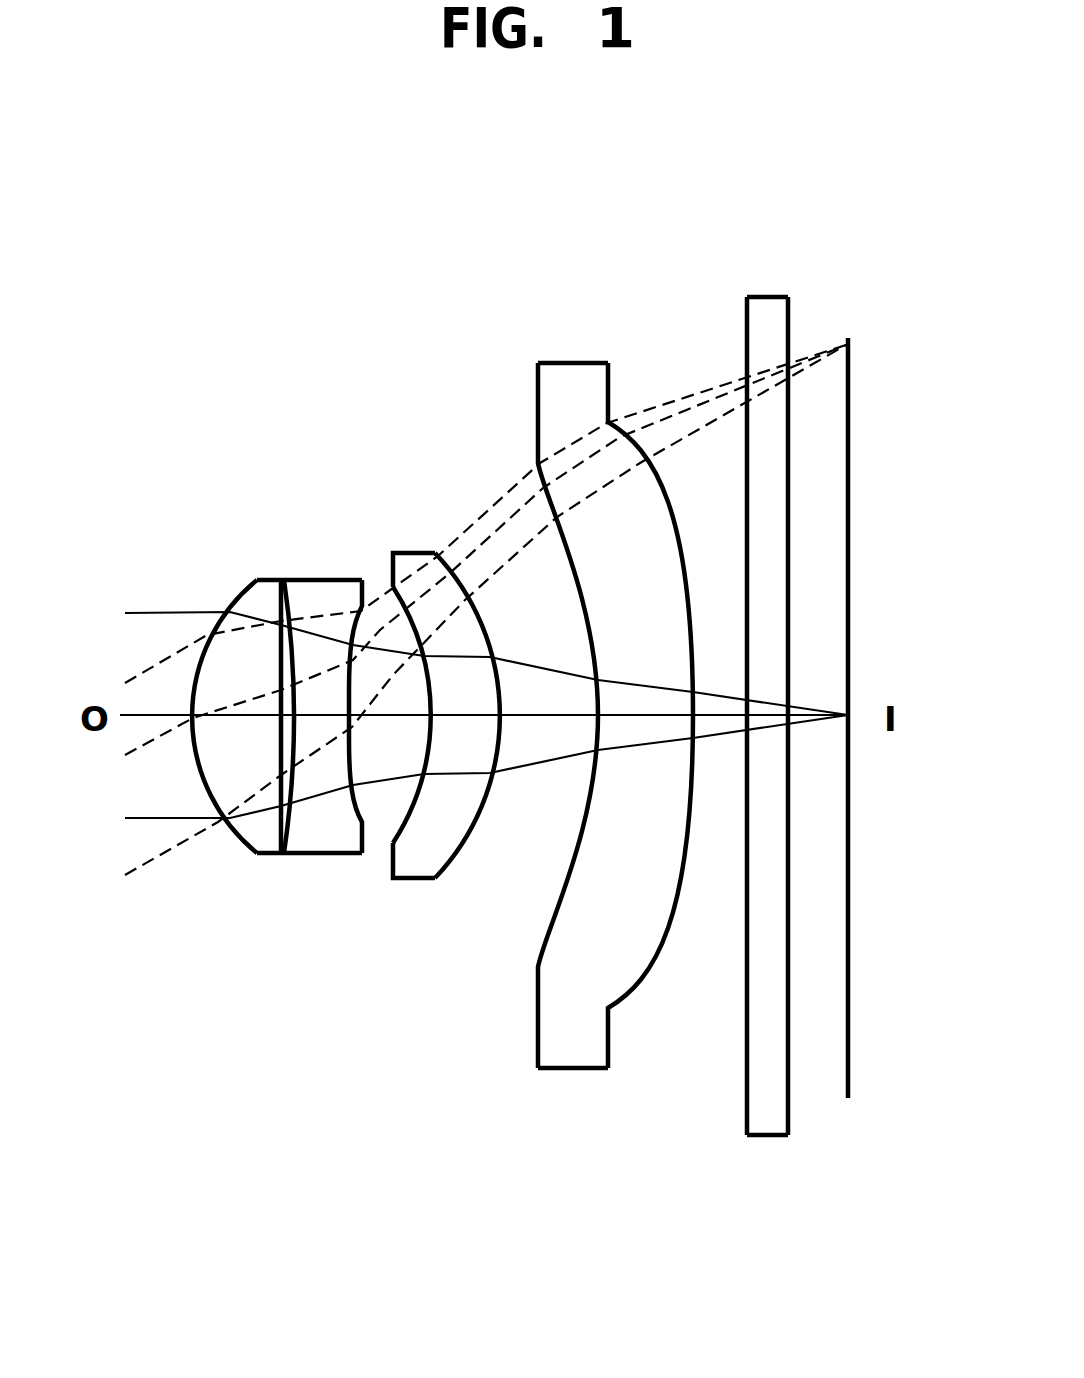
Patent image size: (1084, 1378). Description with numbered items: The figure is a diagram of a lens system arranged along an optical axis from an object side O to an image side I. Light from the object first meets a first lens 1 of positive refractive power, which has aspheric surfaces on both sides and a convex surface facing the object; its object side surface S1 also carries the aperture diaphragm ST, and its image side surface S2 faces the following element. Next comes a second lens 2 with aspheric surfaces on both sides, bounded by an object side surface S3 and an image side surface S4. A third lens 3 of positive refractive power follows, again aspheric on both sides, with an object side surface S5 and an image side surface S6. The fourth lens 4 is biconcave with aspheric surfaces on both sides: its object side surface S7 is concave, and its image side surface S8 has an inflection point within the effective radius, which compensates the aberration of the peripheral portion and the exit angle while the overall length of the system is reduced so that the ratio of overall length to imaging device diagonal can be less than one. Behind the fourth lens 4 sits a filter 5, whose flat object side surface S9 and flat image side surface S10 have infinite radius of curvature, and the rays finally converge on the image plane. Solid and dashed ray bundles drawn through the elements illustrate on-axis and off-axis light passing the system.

The first lens 1 is at (221, 720).
The second lens 2 is at (333, 722).
The third lens 3 is at (446, 731).
The fourth lens 4 is at (605, 676).
The filter 5 is at (751, 701).
The object side surface of first lens S1 is at (205, 790).
The image side surface of first lens S2 is at (272, 766).
The object side surface of second lens S3 is at (302, 787).
The image side surface of second lens S4 is at (358, 803).
The object side surface of third lens S5 is at (401, 814).
The image side surface of third lens S6 is at (468, 826).
The object side surface of fourth lens S7 is at (587, 815).
The image side surface of fourth lens S8 is at (653, 968).
The object side surface of filter S9 is at (746, 1077).
The image side surface of filter S10 is at (786, 1103).